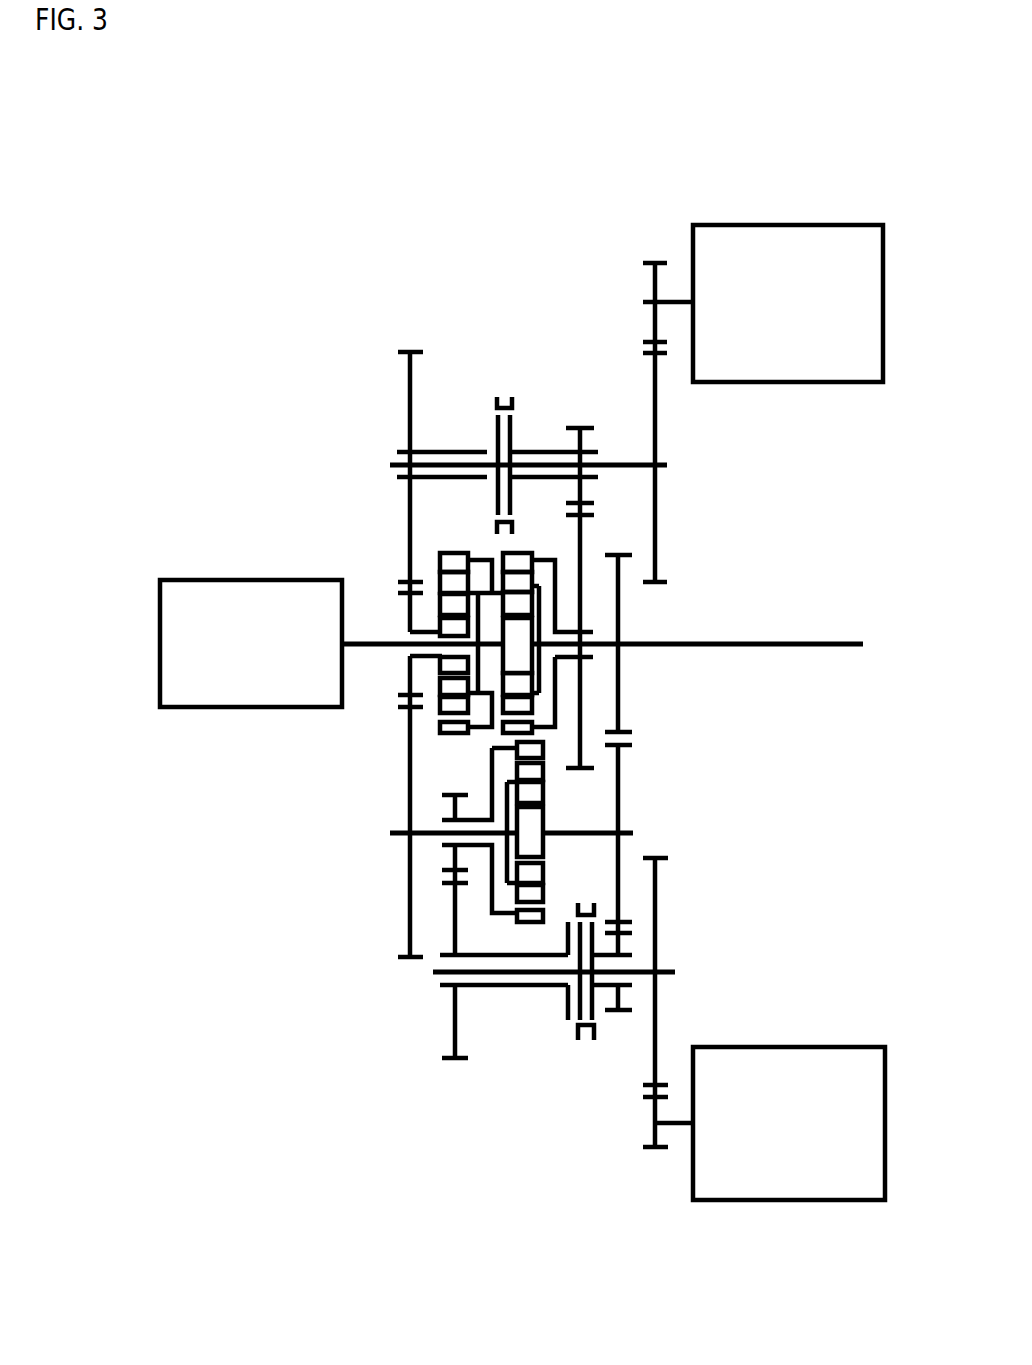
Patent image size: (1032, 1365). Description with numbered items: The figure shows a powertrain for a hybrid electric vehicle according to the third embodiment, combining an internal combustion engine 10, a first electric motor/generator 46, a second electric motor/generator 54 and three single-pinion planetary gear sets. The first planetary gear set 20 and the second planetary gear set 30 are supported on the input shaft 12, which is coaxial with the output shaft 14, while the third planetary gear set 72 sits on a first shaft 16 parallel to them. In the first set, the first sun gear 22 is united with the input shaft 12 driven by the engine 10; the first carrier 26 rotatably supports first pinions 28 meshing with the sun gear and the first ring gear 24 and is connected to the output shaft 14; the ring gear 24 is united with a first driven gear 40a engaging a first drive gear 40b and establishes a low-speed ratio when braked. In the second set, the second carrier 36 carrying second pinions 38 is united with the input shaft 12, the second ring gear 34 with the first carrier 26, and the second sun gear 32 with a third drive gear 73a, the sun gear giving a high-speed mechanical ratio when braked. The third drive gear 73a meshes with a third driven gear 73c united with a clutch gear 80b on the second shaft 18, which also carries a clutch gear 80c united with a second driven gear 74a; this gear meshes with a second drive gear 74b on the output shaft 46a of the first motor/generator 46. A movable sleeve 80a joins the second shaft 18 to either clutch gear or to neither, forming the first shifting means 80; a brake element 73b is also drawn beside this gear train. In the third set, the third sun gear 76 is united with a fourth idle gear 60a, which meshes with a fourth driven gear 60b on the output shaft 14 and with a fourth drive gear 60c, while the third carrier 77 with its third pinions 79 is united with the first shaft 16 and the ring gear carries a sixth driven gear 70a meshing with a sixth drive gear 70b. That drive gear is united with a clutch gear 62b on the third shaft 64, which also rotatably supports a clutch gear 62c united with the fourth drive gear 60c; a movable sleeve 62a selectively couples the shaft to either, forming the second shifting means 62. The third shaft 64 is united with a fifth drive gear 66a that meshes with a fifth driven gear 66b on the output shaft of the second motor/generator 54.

The internal combustion engine 10 is at (199, 580).
The input shaft 12 is at (373, 648).
The output shaft 14 is at (773, 647).
The first shaft 16 is at (392, 833).
The second shaft 18 is at (390, 465).
The first planetary gear set 20 is at (531, 522).
The first sun gear 22 is at (532, 657).
The first ring gear 24 is at (532, 555).
The first carrier 26 is at (585, 575).
The first pinions 28 is at (548, 585).
The second planetary gear set 30 is at (445, 752).
The second sun gear 32 is at (440, 660).
The second ring gear 34 is at (443, 558).
The second carrier 36 is at (440, 592).
The second pinions 38 is at (440, 708).
The first driven gear 40a is at (582, 716).
The first drive gear 40b is at (593, 440).
The first electric motor/generator 46 is at (815, 224).
The output shaft of the first motor/generator 46a is at (677, 300).
The second electric motor/generator 54 is at (852, 1047).
The fourth idle gear 60a is at (620, 768).
The fourth driven gear 60b is at (618, 636).
The fourth drive gear 60c is at (623, 947).
The second shifting means 62 is at (571, 1052).
The movable sleeve 62a is at (597, 1040).
The clutch gear 62b is at (566, 1020).
The clutch gear 62c is at (593, 1025).
The third shaft 64 is at (437, 972).
The fifth drive gear 66a is at (657, 1015).
The fifth driven gear 66b is at (653, 1130).
The sixth driven gear 70a is at (453, 858).
The sixth drive gear 70b is at (453, 1037).
The third planetary gear set 72 is at (586, 886).
The third drive gear 73a is at (410, 612).
The brake member 73b is at (408, 927).
The third driven gear 73c is at (408, 397).
The second driven gear 74a is at (657, 445).
The second drive gear 74b is at (652, 283).
The third sun gear 76 is at (548, 850).
The third carrier 77 is at (548, 877).
The third pinions 79 is at (548, 792).
The first shifting means 80 is at (505, 366).
The movable sleeve 80a is at (510, 412).
The clutch gear 80b is at (497, 417).
The clutch gear 80c is at (513, 423).